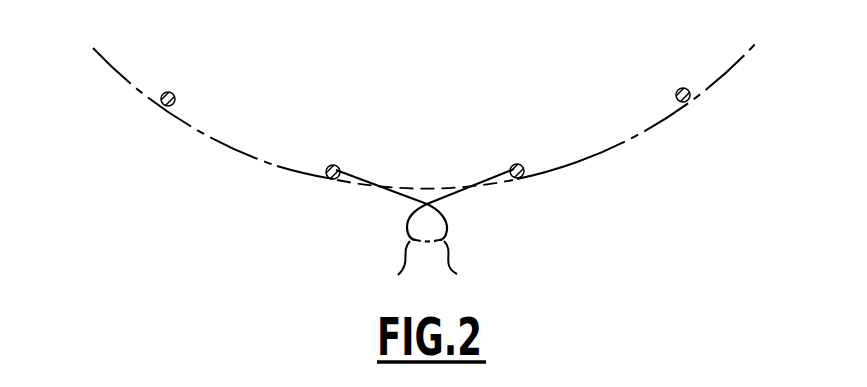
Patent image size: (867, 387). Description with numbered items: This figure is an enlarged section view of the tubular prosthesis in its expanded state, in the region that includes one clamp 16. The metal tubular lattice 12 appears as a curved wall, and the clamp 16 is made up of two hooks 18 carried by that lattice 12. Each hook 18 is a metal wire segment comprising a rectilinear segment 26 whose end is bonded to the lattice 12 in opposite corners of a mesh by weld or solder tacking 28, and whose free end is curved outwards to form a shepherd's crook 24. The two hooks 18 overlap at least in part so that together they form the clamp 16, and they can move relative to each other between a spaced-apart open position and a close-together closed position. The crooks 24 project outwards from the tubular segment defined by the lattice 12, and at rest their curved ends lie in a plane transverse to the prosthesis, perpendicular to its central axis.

The tubular lattice 12 is at (677, 90).
The clamp 16 is at (464, 220).
The hook 18 is at (429, 201).
The shepherd's crook 24 is at (427, 262).
The rectilinear segment 26 is at (388, 188).
The weld or solder tacking 28 is at (335, 166).